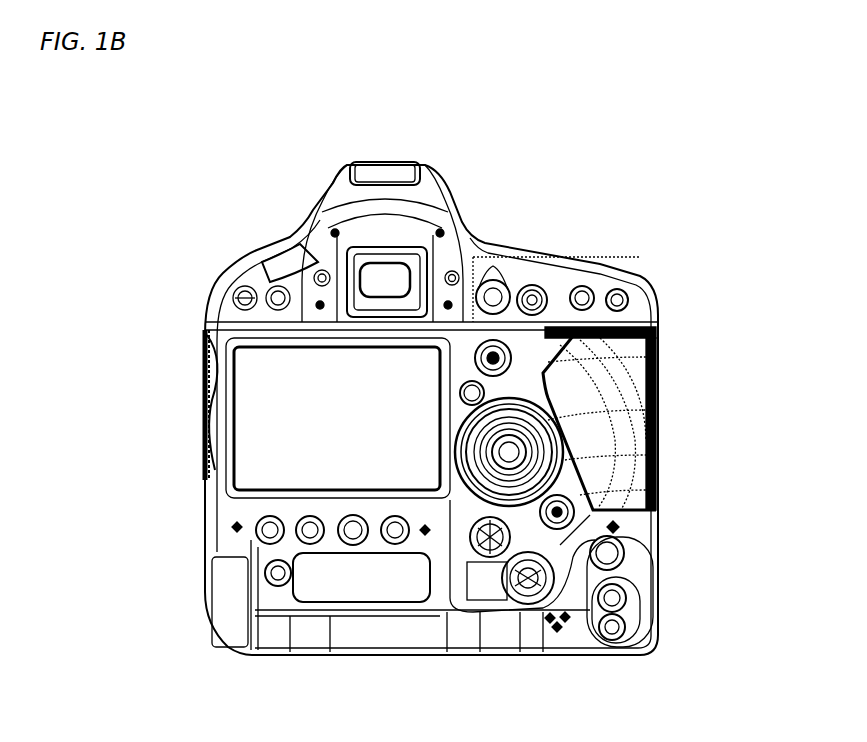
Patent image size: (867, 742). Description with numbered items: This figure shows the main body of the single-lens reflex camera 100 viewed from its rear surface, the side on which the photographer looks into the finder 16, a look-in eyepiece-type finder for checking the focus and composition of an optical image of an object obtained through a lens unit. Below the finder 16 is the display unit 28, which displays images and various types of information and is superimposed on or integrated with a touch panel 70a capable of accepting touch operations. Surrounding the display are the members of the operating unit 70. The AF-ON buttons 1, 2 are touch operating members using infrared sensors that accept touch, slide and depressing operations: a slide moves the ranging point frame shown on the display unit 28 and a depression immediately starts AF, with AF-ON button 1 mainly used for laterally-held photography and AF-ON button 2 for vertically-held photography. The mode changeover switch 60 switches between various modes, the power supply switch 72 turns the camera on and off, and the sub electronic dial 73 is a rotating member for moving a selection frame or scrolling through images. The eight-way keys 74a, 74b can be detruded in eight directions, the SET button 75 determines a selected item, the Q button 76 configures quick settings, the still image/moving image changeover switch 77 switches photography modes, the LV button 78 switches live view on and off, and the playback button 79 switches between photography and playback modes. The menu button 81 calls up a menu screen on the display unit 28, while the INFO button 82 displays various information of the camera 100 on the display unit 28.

The camera 100 is at (258, 188).
The AF-ON button 1 is at (568, 247).
The finder 16 is at (372, 282).
The display unit 28 is at (385, 405).
The touch panel 70a is at (337, 418).
The operating unit 70 is at (105, 355).
The mode changeover switch 60 is at (292, 248).
The INFO button 82 is at (262, 265).
The menu button 81 is at (222, 290).
The playback button 79 is at (199, 390).
The still image/moving image changeover switch 77 is at (503, 237).
The LV button 78 is at (538, 245).
The 8-way key 74a is at (650, 293).
The Q button 76 is at (548, 337).
The sub electronic dial 73 is at (540, 382).
The SET button 75 is at (562, 420).
The power supply switch 72 is at (585, 470).
The 8-way key 74b is at (578, 510).
The AF-ON button 2 is at (620, 535).